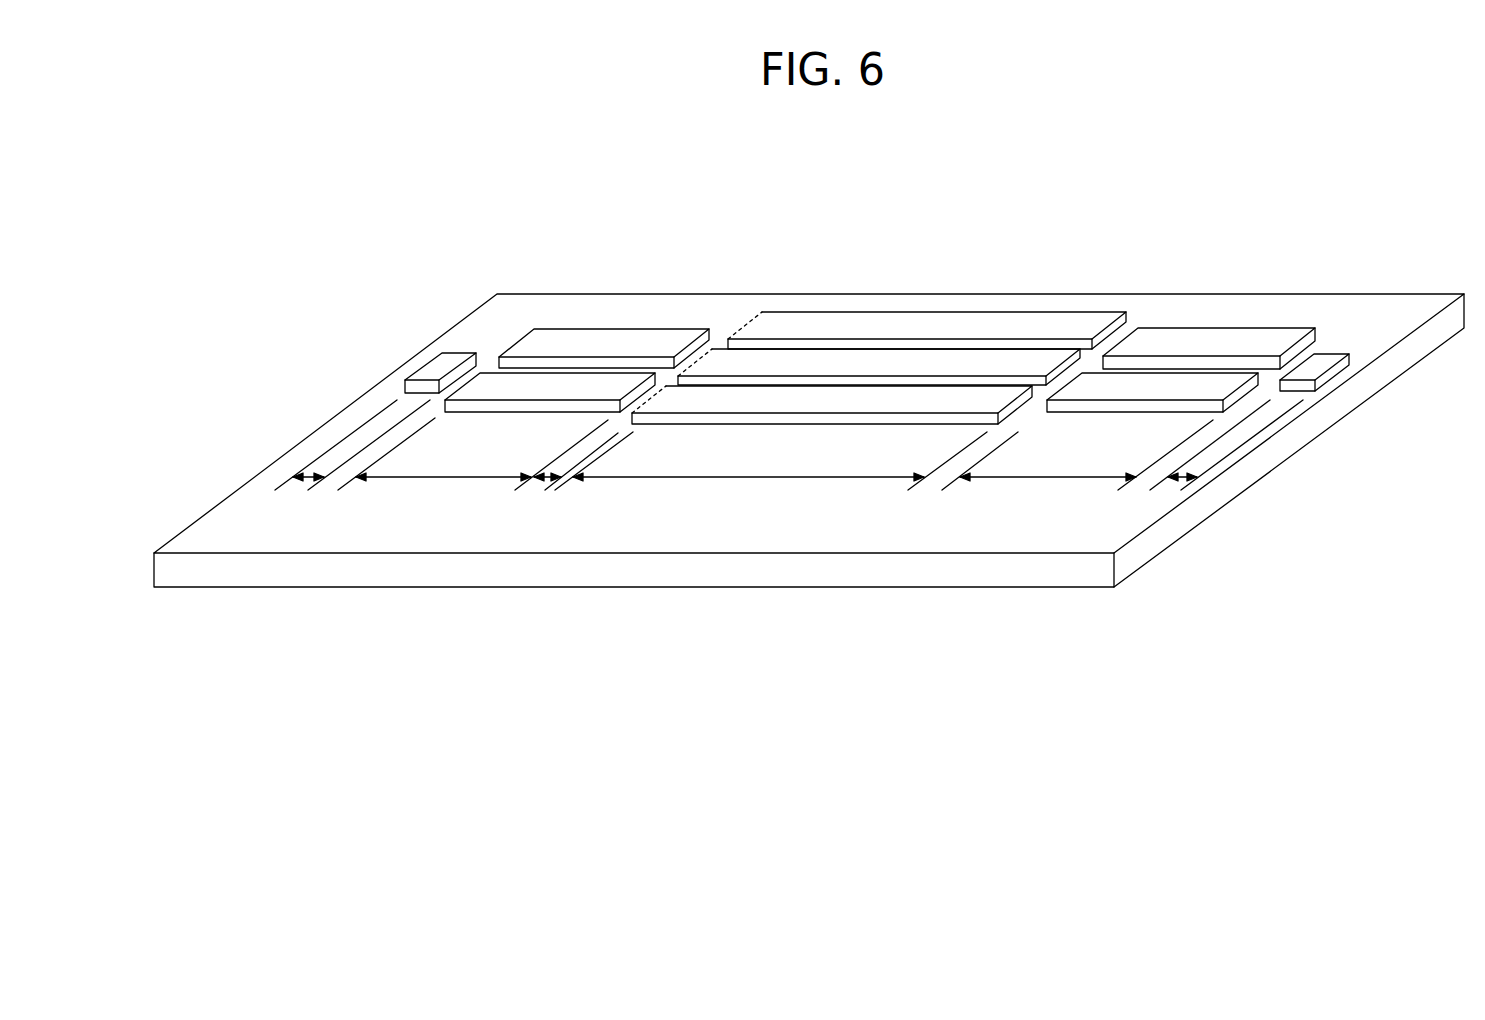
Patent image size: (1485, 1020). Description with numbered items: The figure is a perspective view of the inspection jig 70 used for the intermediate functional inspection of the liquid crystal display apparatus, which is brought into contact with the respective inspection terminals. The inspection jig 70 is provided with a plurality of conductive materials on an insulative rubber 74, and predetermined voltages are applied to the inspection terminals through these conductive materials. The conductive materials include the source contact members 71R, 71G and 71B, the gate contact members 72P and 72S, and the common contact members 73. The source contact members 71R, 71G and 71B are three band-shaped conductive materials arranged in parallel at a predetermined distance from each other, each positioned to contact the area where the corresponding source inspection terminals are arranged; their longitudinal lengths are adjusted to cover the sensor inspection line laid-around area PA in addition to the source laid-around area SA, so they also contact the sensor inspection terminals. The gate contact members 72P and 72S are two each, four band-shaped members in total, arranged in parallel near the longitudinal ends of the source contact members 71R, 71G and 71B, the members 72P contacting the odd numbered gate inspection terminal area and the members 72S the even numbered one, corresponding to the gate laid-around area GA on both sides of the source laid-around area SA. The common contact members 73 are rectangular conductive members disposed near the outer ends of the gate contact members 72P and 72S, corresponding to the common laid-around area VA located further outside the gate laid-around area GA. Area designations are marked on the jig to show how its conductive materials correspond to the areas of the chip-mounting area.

The inspection jig 70 is at (746, 165).
The source contact member 71R is at (846, 402).
The source contact member 71G is at (917, 362).
The source contact member 71B is at (979, 322).
The gate contact member 72S is at (587, 383).
The gate contact member 72P is at (652, 342).
The common contact member 73 is at (446, 366).
The insulative rubber 74 is at (693, 572).
The gate laid-around area GA is at (775, 454).
The source laid-around area SA is at (771, 461).
The sensor inspection line laid-around area PA is at (558, 483).
The common laid-around area VA is at (305, 483).